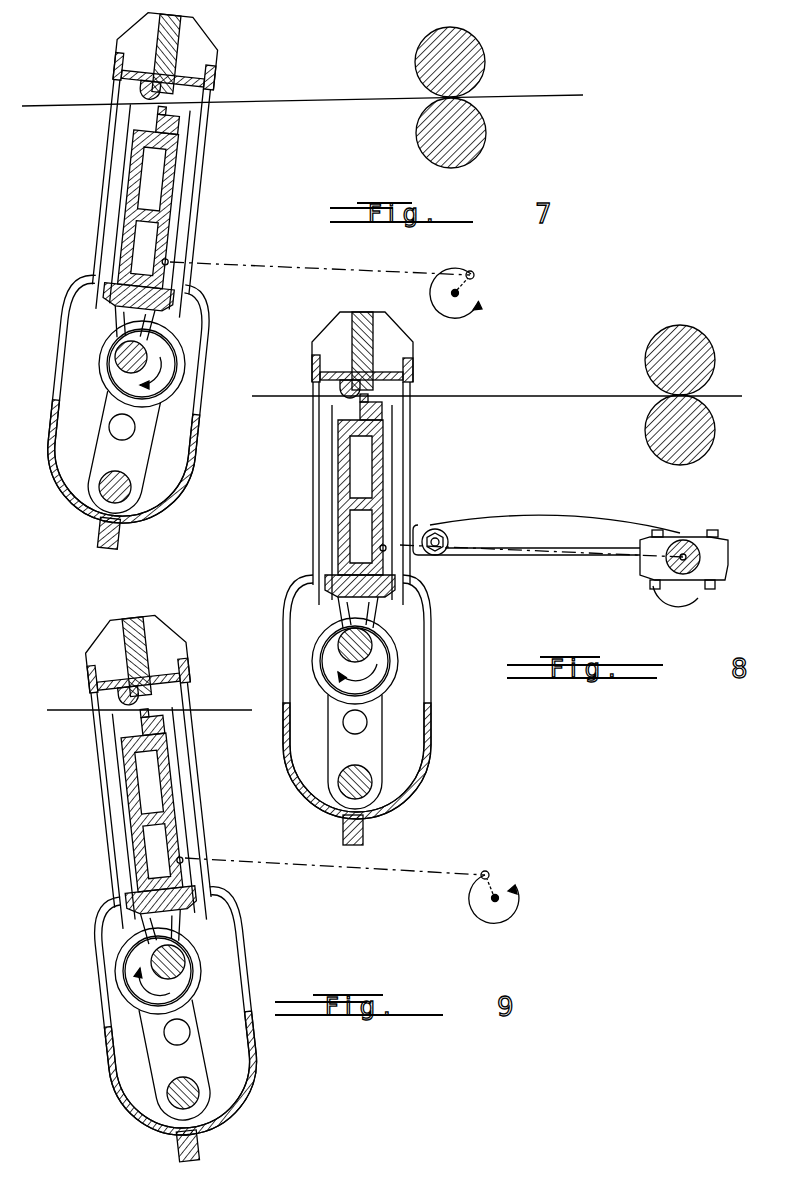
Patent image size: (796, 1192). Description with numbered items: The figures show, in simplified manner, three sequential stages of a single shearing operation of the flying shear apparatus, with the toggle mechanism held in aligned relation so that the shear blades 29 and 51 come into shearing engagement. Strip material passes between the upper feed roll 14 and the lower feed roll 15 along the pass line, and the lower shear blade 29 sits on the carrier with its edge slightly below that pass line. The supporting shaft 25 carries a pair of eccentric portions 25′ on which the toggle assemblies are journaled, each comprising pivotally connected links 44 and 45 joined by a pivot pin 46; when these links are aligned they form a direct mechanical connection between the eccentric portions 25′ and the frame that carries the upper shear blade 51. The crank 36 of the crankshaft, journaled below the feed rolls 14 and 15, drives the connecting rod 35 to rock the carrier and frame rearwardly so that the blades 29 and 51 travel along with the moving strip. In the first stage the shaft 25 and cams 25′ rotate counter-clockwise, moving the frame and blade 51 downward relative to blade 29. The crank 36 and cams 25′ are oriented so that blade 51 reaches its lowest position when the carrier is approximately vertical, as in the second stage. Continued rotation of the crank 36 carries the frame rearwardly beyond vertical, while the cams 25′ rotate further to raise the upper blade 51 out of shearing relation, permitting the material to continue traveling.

In FIG. 7, the upper feed roll 14 is at (477, 68).
In FIG. 7, the lower feed roll 15 is at (479, 141).
In FIG. 7, the supporting shaft 25 is at (120, 358).
In FIG. 7, the eccentric portions 25′ is at (164, 380).
In FIG. 8, the eccentric portions 25′ is at (370, 677).
In FIG. 9, the eccentric portions 25′ is at (140, 990).
In FIG. 7, the lower shear blade 29 is at (135, 117).
In FIG. 8, the lower shear blade 29 is at (357, 410).
In FIG. 7, the driving rod 35 is at (275, 264).
In FIG. 8, the driving rod 35 is at (532, 523).
In FIG. 7, the eccentric reach 36 is at (474, 273).
In FIG. 8, the eccentric reach 36 is at (688, 545).
In FIG. 8, the toggle link 44 is at (380, 704).
In FIG. 8, the toggle link 45 is at (370, 745).
In FIG. 8, the pivot pin 46 is at (350, 724).
In FIG. 7, the upper shear blade 51 is at (148, 90).
In FIG. 8, the upper shear blade 51 is at (345, 390).